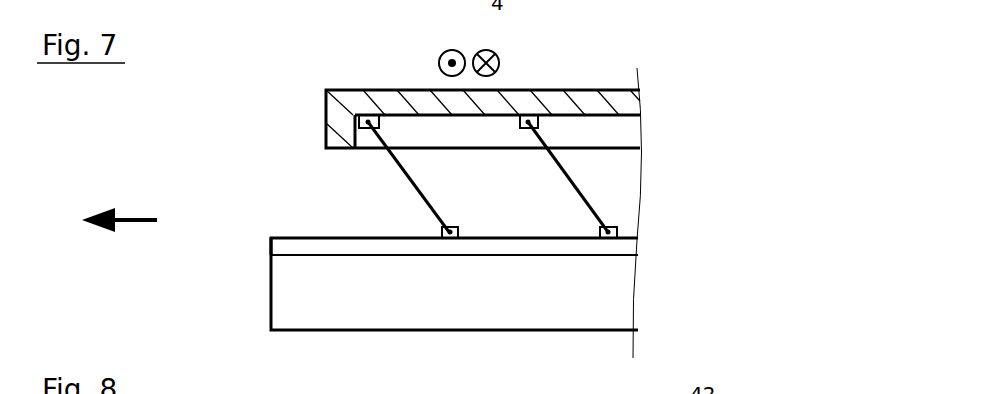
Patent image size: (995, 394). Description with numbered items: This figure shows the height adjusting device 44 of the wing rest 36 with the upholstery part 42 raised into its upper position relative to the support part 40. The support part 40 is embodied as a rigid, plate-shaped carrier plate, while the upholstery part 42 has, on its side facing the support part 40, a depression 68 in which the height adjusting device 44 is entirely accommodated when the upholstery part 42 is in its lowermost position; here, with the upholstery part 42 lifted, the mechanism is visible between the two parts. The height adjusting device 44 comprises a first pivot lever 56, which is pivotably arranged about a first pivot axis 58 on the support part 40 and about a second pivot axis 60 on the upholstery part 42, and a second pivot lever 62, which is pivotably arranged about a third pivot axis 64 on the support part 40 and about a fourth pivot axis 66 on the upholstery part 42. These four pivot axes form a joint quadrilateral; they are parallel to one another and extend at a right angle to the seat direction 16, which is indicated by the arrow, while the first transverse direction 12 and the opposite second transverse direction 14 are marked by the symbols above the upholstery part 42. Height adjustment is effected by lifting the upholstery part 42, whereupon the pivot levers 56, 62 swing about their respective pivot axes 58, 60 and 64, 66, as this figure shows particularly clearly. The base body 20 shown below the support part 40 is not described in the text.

The first transverse direction 12 is at (438, 63).
The second transverse direction 14 is at (500, 63).
The seat direction 16 is at (133, 218).
The base body 20 is at (618, 297).
The wing rest 36 is at (247, 188).
The support part 40 is at (620, 248).
The upholstery part 42 is at (598, 105).
The height adjusting device 44 is at (335, 236).
The first pivot lever 56 is at (417, 193).
The first pivot axis 58 is at (448, 238).
The second pivot axis 60 is at (359, 130).
The second pivot lever 62 is at (577, 195).
The third pivot axis 64 is at (609, 238).
The fourth pivot axis 66 is at (529, 126).
The depression 68 is at (623, 130).